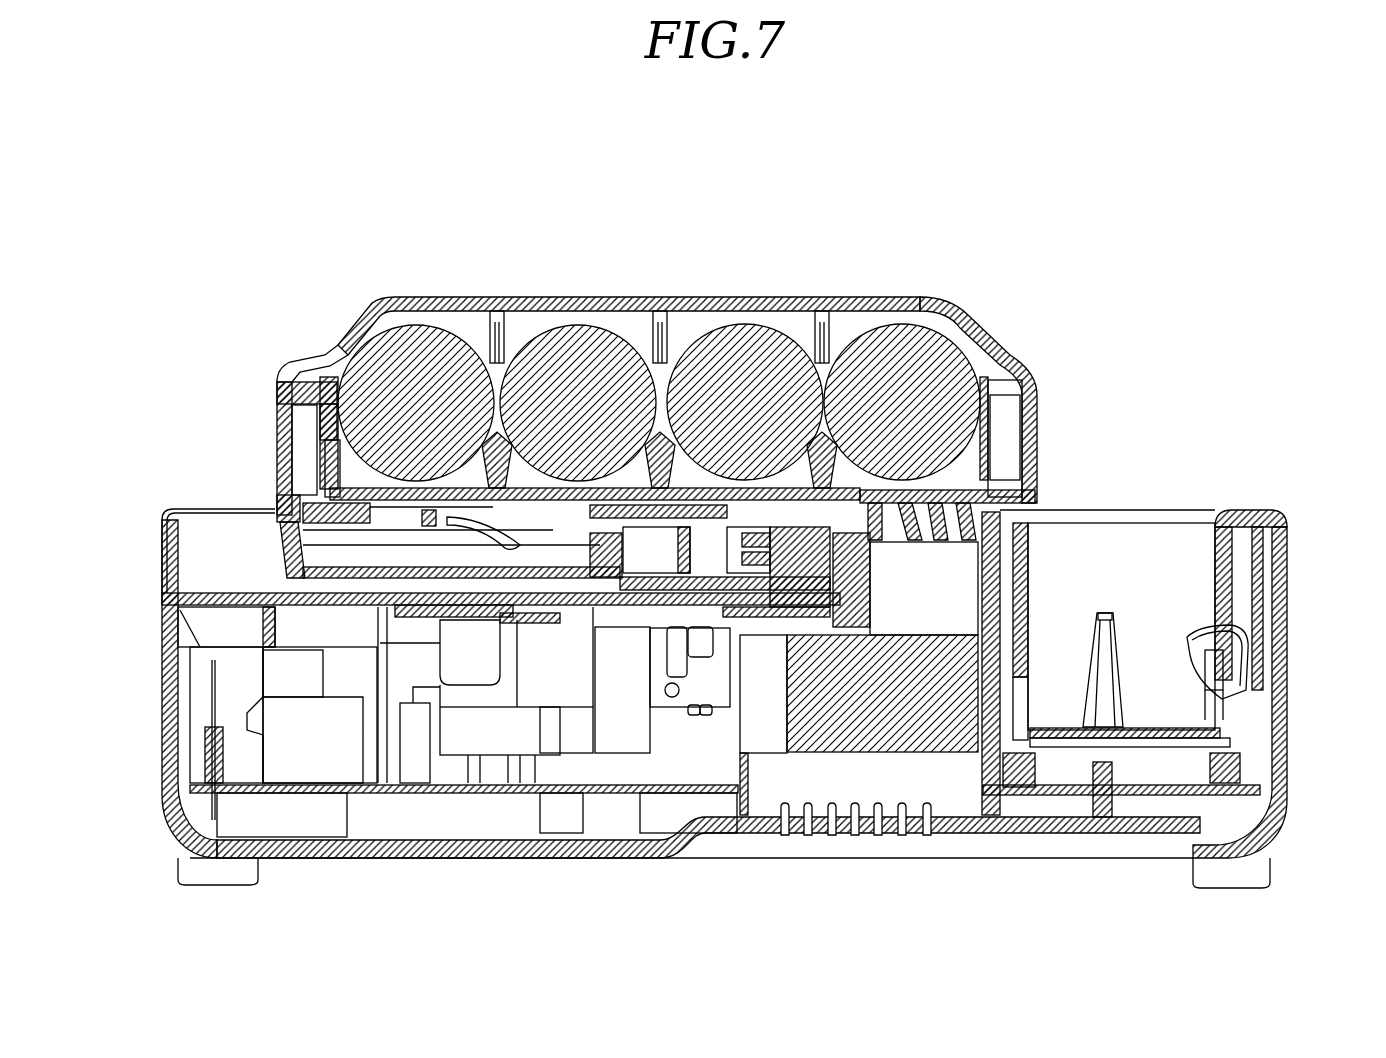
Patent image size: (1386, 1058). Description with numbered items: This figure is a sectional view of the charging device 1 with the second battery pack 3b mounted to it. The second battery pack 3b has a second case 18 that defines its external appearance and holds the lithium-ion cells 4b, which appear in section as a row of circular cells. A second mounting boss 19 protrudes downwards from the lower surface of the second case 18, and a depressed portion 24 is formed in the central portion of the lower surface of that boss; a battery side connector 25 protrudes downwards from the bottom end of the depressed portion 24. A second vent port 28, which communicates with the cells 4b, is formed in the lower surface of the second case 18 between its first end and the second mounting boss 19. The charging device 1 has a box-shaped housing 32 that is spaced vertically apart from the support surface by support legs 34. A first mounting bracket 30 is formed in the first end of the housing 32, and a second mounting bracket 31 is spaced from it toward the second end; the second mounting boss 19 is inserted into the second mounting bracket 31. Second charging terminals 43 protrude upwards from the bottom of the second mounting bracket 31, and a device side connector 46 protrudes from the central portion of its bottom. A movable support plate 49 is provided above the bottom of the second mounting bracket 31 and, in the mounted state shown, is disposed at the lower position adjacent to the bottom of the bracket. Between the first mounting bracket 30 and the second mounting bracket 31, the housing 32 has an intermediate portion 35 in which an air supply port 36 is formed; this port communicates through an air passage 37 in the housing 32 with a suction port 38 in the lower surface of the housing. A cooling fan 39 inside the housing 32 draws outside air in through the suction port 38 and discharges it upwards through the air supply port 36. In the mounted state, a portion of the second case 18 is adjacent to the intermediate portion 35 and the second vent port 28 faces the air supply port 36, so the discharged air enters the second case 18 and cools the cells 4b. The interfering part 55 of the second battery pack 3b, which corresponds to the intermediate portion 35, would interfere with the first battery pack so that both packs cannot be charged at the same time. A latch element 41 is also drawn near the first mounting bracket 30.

The charging device 1 is at (1285, 497).
The second battery pack 3b is at (771, 286).
The cells 4b is at (565, 405).
The second case 18 is at (933, 312).
The second mounting boss 19 is at (302, 553).
The depressed portion 24 is at (650, 565).
The battery side connector 25 is at (520, 540).
The second vent port 28 is at (982, 497).
The first mounting bracket 30 is at (1160, 563).
The second mounting bracket 31 is at (668, 545).
The housing 32 is at (168, 703).
The support legs 34 is at (190, 858).
The intermediate portion 35 is at (948, 523).
The air supply port 36 is at (928, 518).
The air passage 37 is at (901, 593).
The suction port 38 is at (855, 823).
The cooling fan 39 is at (817, 723).
The latch lever 41 is at (1187, 637).
The second charging terminals 43 is at (778, 513).
The device side connector 46 is at (630, 455).
The movable support plate 49 is at (440, 560).
The interfering part 55 is at (993, 408).